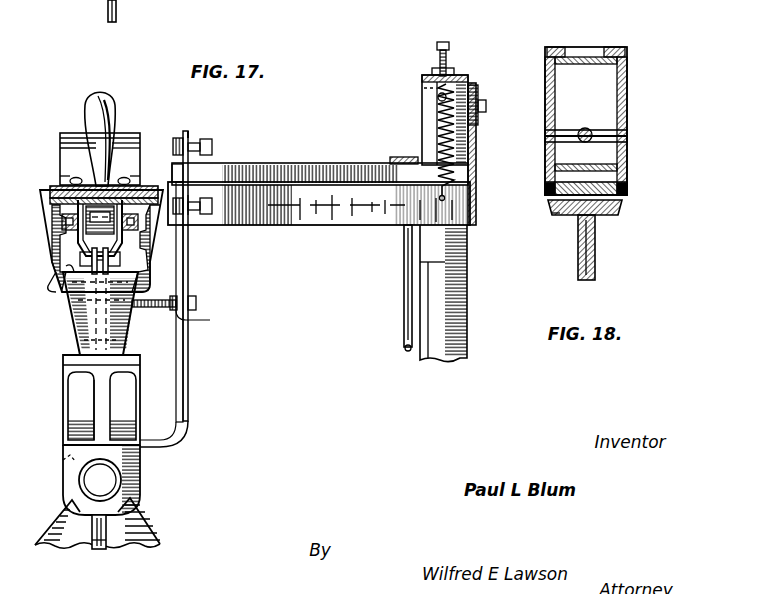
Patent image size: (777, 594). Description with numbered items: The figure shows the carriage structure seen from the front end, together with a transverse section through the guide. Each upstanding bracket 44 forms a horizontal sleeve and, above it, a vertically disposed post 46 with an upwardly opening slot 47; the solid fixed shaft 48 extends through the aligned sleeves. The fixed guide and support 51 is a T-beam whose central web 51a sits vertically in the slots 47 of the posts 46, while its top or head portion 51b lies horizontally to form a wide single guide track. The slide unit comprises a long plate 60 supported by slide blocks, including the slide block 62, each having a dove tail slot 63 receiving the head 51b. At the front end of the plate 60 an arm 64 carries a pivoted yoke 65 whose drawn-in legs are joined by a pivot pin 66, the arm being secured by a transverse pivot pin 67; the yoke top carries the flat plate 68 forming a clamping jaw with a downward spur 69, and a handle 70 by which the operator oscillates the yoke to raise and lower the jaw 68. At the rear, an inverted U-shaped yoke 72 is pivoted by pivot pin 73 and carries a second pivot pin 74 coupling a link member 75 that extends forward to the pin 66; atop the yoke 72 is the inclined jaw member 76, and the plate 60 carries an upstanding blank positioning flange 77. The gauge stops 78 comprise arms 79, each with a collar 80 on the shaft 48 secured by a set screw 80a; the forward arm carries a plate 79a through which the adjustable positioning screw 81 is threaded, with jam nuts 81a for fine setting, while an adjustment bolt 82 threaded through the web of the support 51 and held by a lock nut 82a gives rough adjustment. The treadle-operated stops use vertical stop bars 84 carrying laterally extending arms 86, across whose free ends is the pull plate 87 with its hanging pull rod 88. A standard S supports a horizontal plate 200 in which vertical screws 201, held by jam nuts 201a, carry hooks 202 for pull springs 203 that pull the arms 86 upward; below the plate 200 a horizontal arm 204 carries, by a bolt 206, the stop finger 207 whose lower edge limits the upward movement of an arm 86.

In FIG. 17, the upstanding bracket 44 is at (156, 532).
In FIG. 17, the vertically disposed post 46 is at (90, 400).
In FIG. 17, the upwardly opening slot 47 is at (74, 352).
In FIG. 17, the solid fixed shaft 48 is at (96, 478).
In FIG. 17, the fixed guide and support 51 is at (72, 306).
In FIG. 18, the fixed guide and support 51 is at (622, 207).
In FIG. 17, the central web 51a is at (66, 331).
In FIG. 18, the central web 51a is at (596, 248).
In FIG. 18, the top or head portion 51b is at (549, 207).
In FIG. 17, the long plate 60 is at (42, 186).
In FIG. 17, the slide block 62 is at (70, 268).
In FIG. 17, the dove tail slot 63 is at (60, 280).
In FIG. 17, the arm 64 is at (80, 210).
In FIG. 17, the yoke 65 is at (58, 202).
In FIG. 17, the pivot pin 66 is at (148, 300).
In FIG. 17, the transverse pivot pin 67 is at (66, 228).
In FIG. 17, the flat plate 68 is at (118, 136).
In FIG. 17, the spur 69 is at (72, 178).
In FIG. 17, the handle 70 is at (112, 104).
In FIG. 18, the yoke 72 is at (627, 118).
In FIG. 18, the pivot pin 73 is at (627, 176).
In FIG. 18, the second pivot pin 74 is at (627, 140).
In FIG. 17, the link member 75 is at (94, 254).
In FIG. 18, the link member 75 is at (592, 126).
In FIG. 18, the jaw member 76 is at (584, 48).
In FIG. 17, the blank positioning flange 77 is at (90, 215).
In FIG. 17, the gauge stops 78 is at (187, 133).
In FIG. 17, the arm 79 is at (186, 365).
In FIG. 17, the plate 79a is at (190, 216).
In FIG. 17, the collar 80 is at (138, 490).
In FIG. 17, the set screw 80a is at (100, 550).
In FIG. 17, the adjustable positioning screw 81 is at (206, 140).
In FIG. 17, the jam nut 81a is at (192, 158).
In FIG. 17, the adjustment bolt 82 is at (194, 300).
In FIG. 17, the lock nut 82a is at (222, 327).
In FIG. 17, the vertical stop bar 84 is at (172, 160).
In FIG. 17, the laterally extending arm 86 is at (322, 188).
In FIG. 17, the pull plate 87 is at (404, 156).
In FIG. 17, the pull rod 88 is at (107, 6).
In FIG. 17, the horizontal plate 200 is at (428, 75).
In FIG. 17, the vertical screw 201 is at (440, 44).
In FIG. 17, the jam nut 201a is at (450, 68).
In FIG. 17, the hook 202 is at (438, 96).
In FIG. 17, the pull spring 203 is at (446, 108).
In FIG. 17, the horizontal arm 204 is at (474, 86).
In FIG. 17, the bolt 206 is at (486, 106).
In FIG. 17, the stop finger 207 is at (478, 150).
In FIG. 17, the standard S is at (466, 304).